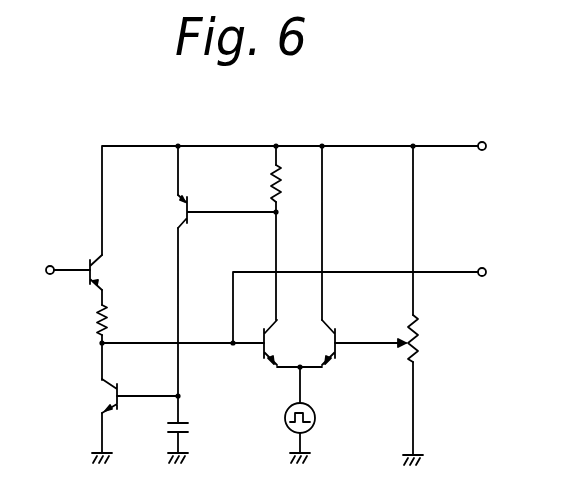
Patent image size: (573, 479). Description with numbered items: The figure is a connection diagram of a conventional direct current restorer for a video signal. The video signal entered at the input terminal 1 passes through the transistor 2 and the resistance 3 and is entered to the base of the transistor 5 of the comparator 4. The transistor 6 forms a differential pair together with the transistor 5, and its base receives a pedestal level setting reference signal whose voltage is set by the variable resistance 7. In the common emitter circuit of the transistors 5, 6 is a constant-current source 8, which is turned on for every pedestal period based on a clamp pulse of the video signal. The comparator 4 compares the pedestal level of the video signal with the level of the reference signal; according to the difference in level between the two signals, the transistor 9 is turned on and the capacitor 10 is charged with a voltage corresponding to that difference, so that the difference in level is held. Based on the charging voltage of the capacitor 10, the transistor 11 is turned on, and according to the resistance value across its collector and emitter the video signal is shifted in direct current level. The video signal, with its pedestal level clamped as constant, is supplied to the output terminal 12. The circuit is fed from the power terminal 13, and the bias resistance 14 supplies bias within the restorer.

The input terminal 1 is at (66, 253).
The transistor 2 is at (108, 272).
The resistance 3 is at (111, 321).
The comparator 4 is at (384, 230).
The transistor 5 is at (261, 334).
The transistor 6 is at (334, 331).
The variable resistance 7 is at (418, 338).
The constant-current source 8 is at (310, 414).
The transistor 9 is at (212, 211).
The capacitor 10 is at (193, 426).
The transistor 11 is at (91, 395).
The output terminal 12 is at (481, 255).
The power terminal 13 is at (479, 131).
The bias resistance 14 is at (290, 183).